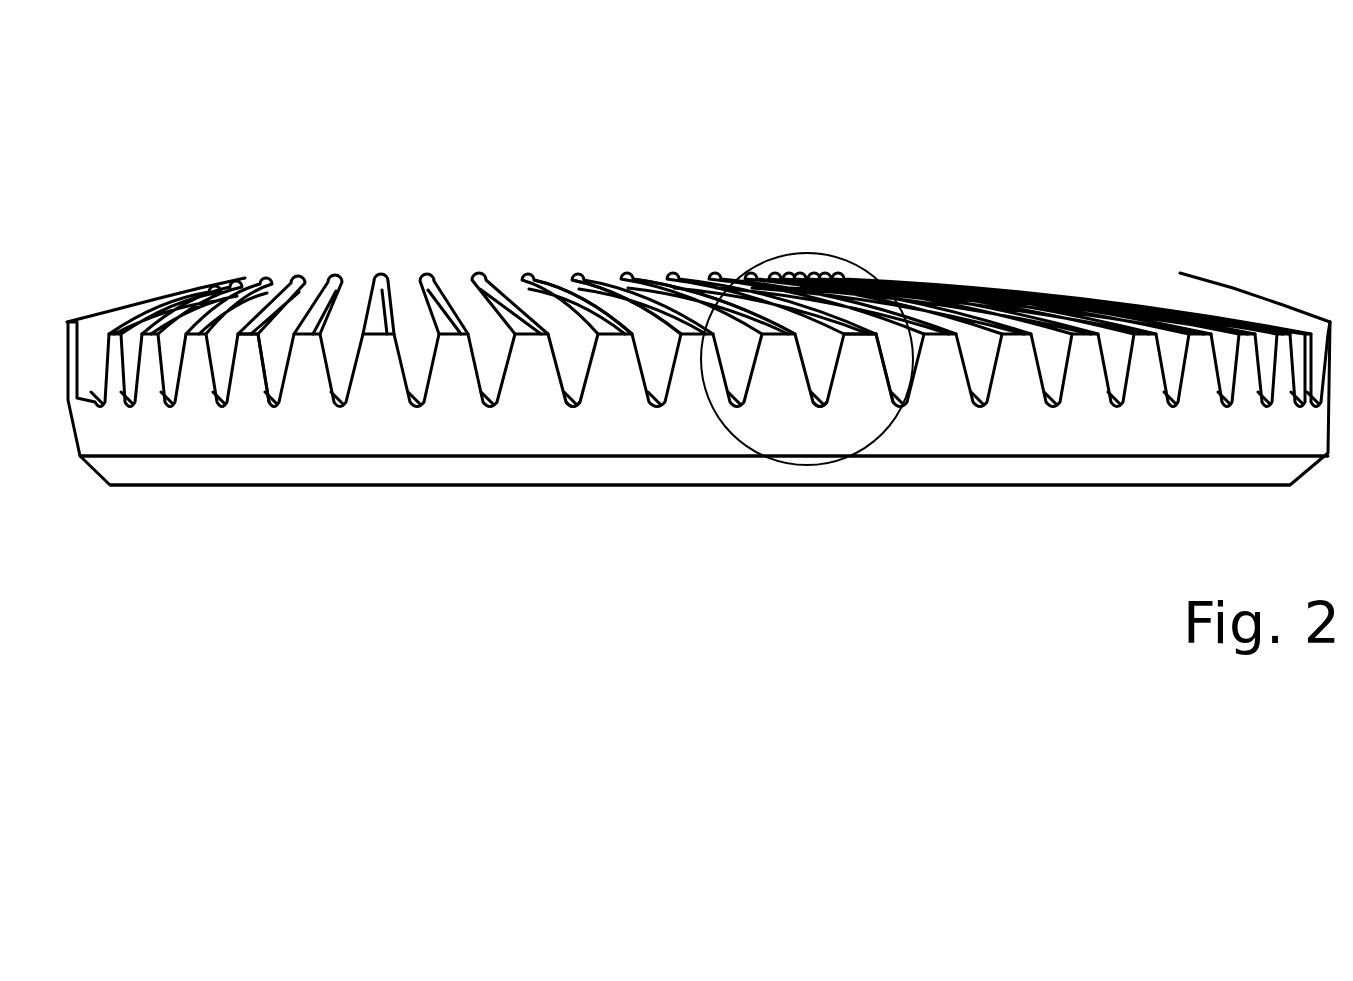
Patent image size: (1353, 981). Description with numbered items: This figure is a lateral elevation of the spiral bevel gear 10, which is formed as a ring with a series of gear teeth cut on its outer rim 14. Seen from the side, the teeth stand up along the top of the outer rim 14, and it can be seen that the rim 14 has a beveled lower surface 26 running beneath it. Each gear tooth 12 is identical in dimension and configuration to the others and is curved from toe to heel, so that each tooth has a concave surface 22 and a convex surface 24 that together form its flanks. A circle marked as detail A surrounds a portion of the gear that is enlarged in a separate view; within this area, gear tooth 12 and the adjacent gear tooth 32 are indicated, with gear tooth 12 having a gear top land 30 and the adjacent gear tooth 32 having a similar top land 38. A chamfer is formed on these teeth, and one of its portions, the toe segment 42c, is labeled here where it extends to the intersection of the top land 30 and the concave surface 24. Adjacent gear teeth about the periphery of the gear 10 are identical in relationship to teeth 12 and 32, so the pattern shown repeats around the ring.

The spiral bevel gear 10 is at (545, 550).
The gear tooth 12 is at (866, 383).
The outer rim 14 is at (312, 437).
The concave surface 22 is at (273, 337).
The convex surface 24 is at (575, 345).
The beveled lower surface 26 is at (355, 477).
The gear top land 30 is at (815, 282).
The adjacent gear tooth 32 is at (783, 377).
The top land 38 is at (660, 283).
The toe segment 42c is at (692, 288).
The detail A is at (872, 272).